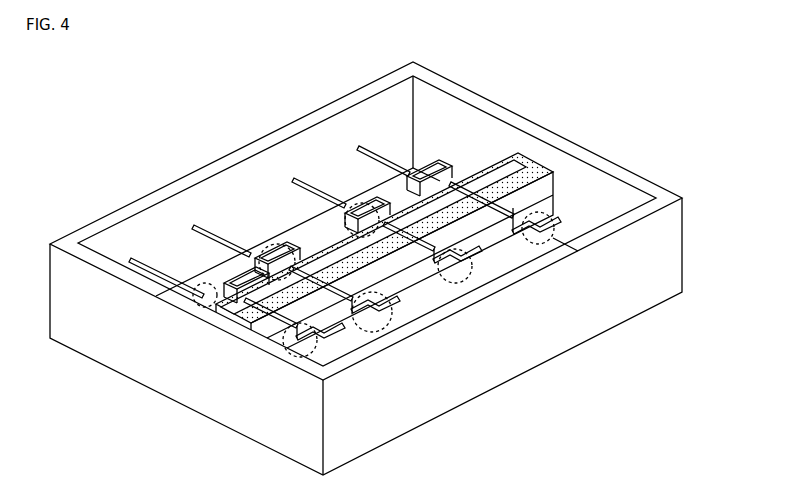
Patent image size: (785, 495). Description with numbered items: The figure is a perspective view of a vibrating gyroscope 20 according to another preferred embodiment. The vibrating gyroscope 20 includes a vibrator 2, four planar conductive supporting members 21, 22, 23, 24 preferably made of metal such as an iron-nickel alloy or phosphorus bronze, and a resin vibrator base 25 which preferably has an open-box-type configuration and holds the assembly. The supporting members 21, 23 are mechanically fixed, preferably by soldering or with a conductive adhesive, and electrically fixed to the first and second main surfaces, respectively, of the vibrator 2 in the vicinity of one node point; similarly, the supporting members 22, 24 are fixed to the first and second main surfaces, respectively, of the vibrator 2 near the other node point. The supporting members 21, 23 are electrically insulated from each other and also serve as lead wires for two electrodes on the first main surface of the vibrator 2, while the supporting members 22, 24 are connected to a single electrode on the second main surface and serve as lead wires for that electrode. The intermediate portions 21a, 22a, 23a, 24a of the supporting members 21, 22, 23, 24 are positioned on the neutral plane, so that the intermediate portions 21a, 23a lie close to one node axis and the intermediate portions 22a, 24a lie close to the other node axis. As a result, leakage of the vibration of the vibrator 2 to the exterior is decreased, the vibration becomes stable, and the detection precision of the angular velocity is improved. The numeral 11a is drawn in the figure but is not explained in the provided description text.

The vibrating gyroscope 20 is at (158, 113).
The vibrator base 25 is at (598, 162).
The vibrator 2 is at (527, 157).
The supporting member 21 is at (192, 284).
The intermediate portion 21a is at (198, 285).
The supporting member 22 is at (426, 172).
The intermediate portion 22a is at (554, 236).
The supporting member 23 is at (235, 252).
The intermediate portion 23a is at (270, 245).
The supporting member 24 is at (330, 200).
The intermediate portion 24a is at (472, 270).
The electrode connection pad 11a is at (361, 203).